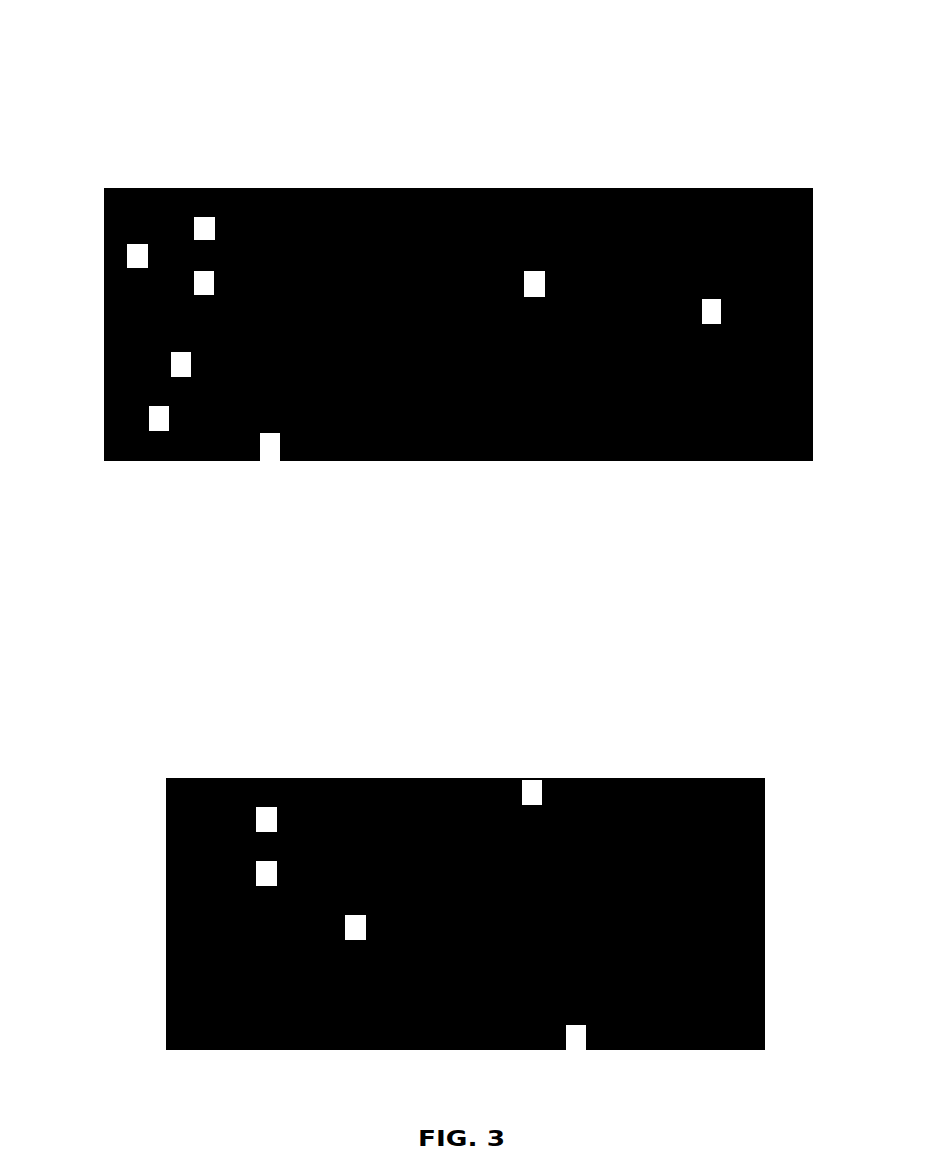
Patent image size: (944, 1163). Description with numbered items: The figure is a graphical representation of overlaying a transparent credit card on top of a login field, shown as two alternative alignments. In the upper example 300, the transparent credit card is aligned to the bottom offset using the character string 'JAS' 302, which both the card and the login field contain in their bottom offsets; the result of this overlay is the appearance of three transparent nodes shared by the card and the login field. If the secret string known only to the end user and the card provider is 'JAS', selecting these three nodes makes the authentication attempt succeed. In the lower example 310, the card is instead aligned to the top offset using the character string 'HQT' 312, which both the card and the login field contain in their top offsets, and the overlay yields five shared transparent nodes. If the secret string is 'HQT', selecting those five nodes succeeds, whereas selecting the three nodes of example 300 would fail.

The example 300 is at (457, 96).
The character string 'JAS' 302 is at (501, 500).
The example 310 is at (457, 673).
The character string 'HQT' 312 is at (388, 723).